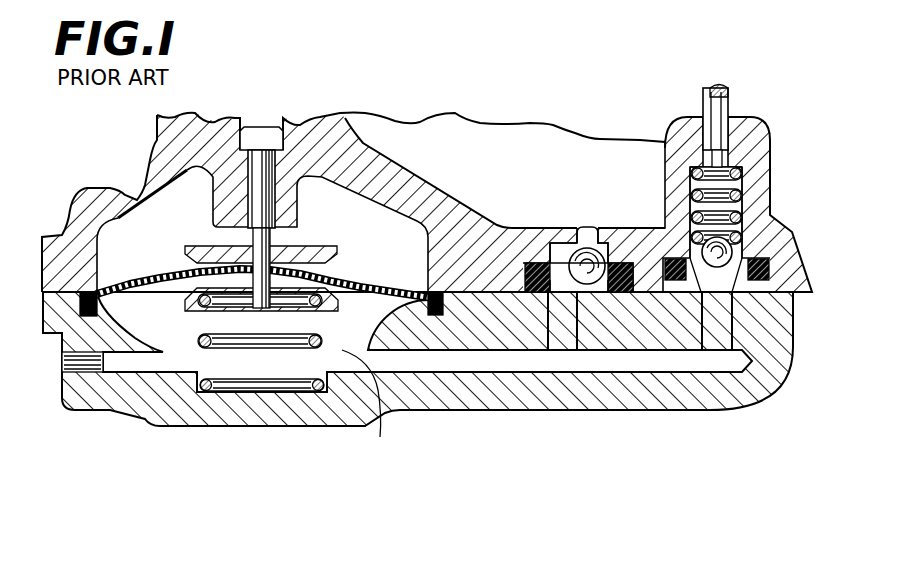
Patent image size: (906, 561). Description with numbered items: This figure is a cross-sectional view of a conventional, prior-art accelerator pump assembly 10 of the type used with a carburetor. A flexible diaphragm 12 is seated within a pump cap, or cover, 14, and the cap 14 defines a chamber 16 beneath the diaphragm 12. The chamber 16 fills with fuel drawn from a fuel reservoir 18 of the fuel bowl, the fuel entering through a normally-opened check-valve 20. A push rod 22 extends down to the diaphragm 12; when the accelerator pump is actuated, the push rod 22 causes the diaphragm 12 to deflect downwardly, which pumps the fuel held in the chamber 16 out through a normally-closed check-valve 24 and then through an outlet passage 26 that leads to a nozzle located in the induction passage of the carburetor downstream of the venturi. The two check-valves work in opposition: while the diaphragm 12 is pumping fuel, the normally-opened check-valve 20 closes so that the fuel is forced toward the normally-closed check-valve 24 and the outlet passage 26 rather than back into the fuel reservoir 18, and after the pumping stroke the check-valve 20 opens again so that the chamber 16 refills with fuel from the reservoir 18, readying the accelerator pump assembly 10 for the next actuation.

The accelerator pump assembly 10 is at (421, 92).
The diaphragm 12 is at (163, 280).
The pump cap 14 is at (127, 400).
The chamber 16 is at (382, 414).
The fuel reservoir 18 is at (507, 186).
The normally-opened check-valve 20 is at (587, 228).
The push rod 22 is at (253, 124).
The normally-closed check-valve 24 is at (707, 248).
The outlet passage 26 is at (728, 90).